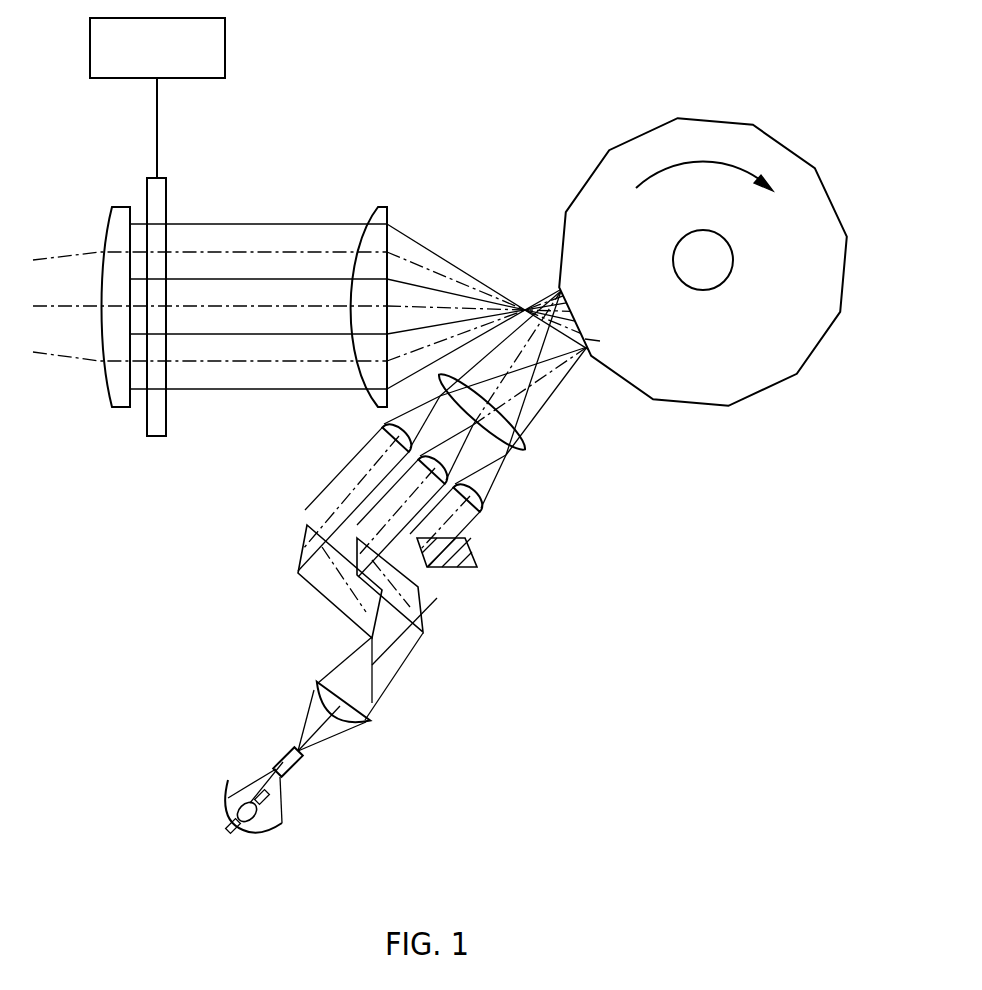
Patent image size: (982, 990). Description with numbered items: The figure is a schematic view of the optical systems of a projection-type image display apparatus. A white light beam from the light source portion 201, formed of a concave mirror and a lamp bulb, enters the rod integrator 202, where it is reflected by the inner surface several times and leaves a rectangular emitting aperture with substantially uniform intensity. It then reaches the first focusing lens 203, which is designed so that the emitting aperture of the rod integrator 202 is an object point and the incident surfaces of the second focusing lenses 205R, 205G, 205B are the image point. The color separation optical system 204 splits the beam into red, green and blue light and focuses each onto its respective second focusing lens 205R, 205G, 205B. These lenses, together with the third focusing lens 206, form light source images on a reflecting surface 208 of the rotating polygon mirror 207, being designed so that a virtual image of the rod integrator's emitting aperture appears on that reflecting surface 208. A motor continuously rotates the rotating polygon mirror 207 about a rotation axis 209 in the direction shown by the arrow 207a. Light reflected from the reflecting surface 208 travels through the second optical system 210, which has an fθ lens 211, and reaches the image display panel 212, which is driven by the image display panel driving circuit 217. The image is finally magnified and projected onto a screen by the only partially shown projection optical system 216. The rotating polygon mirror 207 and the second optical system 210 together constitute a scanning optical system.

The light source portion 201 is at (248, 752).
The rod integrator 202 is at (301, 768).
The first focusing lens 203 is at (366, 722).
The color separation optical system 204 is at (520, 542).
The second focusing lens for red 205R is at (386, 431).
The second focusing lens for green 205G is at (446, 469).
The second focusing lens for blue 205B is at (486, 503).
The third focusing lens 206 is at (528, 450).
The rotating polygon mirror 207 is at (737, 383).
The arrow 207a is at (705, 163).
The reflecting surface 208 is at (607, 341).
The rotation axis 209 is at (712, 262).
The second optical system 210 is at (447, 244).
The fθ lens 211 is at (369, 270).
The image display panel 212 is at (152, 436).
The projection optical system 216 is at (118, 402).
The image display panel driving circuit 217 is at (225, 48).